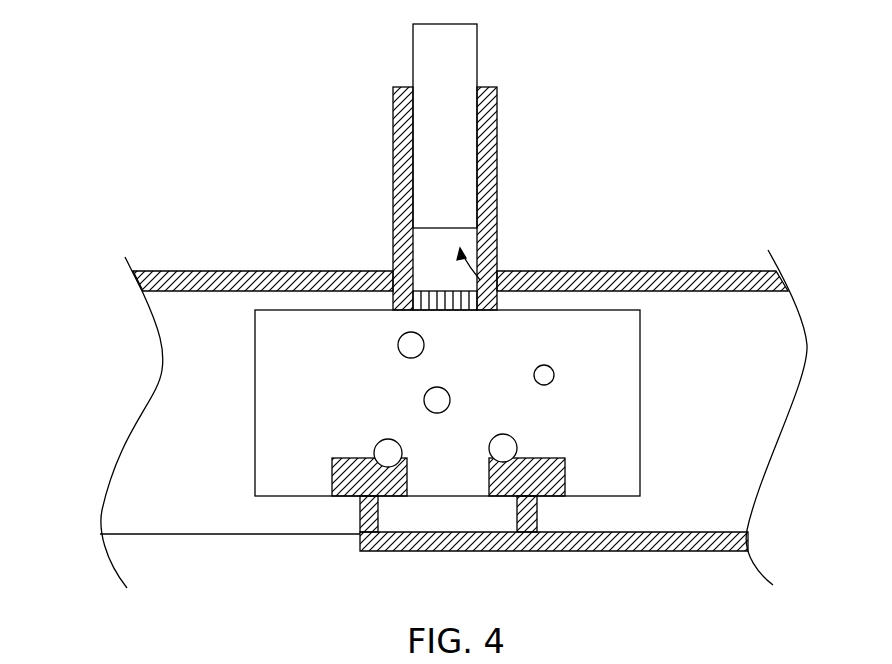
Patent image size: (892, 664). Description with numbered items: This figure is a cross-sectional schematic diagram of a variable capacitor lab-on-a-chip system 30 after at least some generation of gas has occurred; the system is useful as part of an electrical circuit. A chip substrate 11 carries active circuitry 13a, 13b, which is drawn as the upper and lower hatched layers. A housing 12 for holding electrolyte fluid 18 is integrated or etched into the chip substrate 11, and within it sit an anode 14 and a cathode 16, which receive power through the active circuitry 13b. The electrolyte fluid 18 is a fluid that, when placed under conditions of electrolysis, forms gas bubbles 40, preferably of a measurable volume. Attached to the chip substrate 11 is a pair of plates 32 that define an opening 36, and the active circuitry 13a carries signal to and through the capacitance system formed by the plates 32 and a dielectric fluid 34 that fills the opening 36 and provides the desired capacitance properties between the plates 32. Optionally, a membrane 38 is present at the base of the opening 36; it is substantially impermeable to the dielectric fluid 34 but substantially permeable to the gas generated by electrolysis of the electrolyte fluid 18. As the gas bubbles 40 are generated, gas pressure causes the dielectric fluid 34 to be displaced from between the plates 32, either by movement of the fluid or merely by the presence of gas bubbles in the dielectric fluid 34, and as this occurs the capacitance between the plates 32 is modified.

The chip substrate 11 is at (760, 327).
The housing 12 is at (640, 437).
The active circuitry 13a is at (700, 270).
The active circuitry 13b is at (723, 551).
The anode 14 is at (517, 478).
The cathode 16 is at (372, 478).
The electrolyte fluid 18 is at (573, 418).
The variable capacitor lab-on-a-chip system 30 is at (141, 184).
The plates 32 is at (413, 180).
The dielectric fluid 34 is at (440, 208).
The opening 36 is at (545, 271).
The membrane 38 is at (455, 290).
The gas bubbles 40 is at (398, 343).